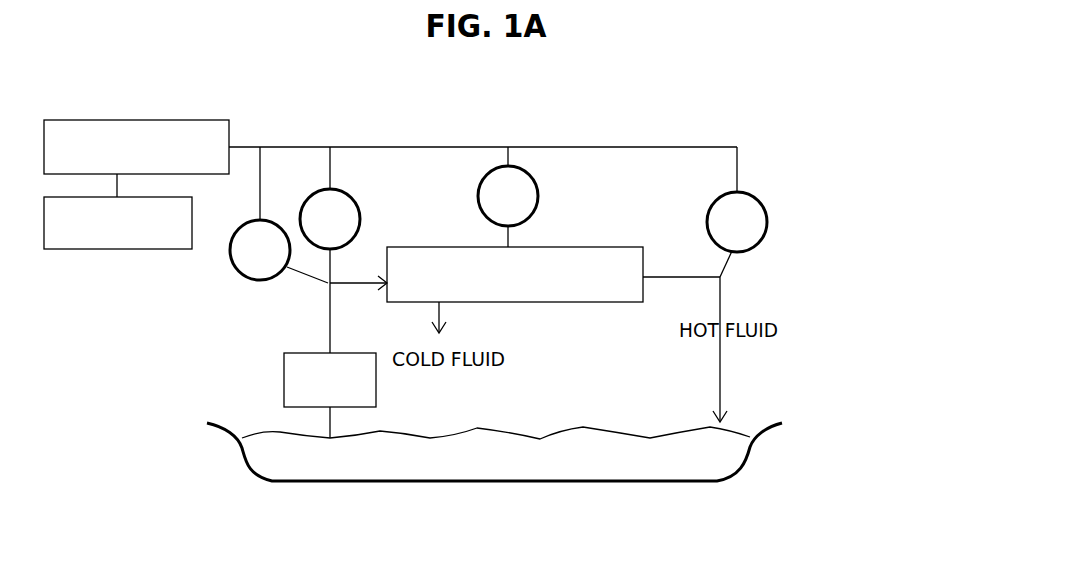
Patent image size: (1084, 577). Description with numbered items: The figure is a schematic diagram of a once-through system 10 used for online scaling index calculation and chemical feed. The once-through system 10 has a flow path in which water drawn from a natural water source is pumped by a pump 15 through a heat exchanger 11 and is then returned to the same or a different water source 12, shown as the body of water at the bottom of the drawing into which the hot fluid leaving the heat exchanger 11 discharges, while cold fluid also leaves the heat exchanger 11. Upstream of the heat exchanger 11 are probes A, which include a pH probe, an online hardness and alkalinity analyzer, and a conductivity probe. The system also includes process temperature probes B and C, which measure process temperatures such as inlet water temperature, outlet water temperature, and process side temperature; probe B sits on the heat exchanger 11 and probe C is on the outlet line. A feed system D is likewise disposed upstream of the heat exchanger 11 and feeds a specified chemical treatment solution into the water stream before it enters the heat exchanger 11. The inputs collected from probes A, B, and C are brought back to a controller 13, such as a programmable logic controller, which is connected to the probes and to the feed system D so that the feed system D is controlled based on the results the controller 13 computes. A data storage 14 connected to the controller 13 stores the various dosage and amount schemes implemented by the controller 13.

The once-through system 10 is at (892, 303).
The heat exchanger 11 is at (504, 284).
The water source 12 is at (571, 466).
The controller 13 is at (127, 158).
The data storage 14 is at (106, 234).
The pump 15 is at (319, 390).
The probes A is at (260, 250).
The process temperature probe B is at (508, 196).
The process temperature probe C is at (737, 222).
The feed system D is at (330, 219).